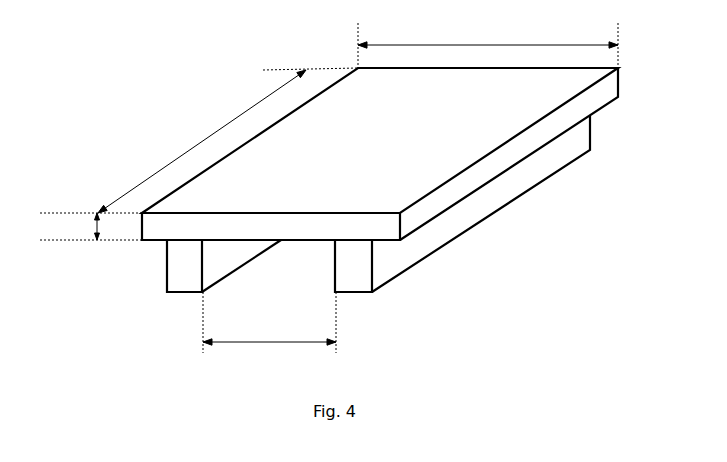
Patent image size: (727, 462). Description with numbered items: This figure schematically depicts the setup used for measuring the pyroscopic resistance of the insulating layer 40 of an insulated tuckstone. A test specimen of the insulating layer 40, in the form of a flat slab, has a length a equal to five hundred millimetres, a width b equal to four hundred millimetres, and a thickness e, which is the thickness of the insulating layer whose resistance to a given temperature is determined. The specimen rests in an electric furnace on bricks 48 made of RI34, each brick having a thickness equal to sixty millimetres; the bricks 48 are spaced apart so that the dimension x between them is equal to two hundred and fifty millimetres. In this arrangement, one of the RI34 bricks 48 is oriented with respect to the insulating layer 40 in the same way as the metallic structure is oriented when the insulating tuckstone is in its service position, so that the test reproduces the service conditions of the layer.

The insulating layer 40 is at (487, 168).
The bricks 48 is at (445, 230).
The length a is at (199, 140).
The width b is at (488, 45).
The thickness e is at (91, 226).
The dimension x is at (269, 322).